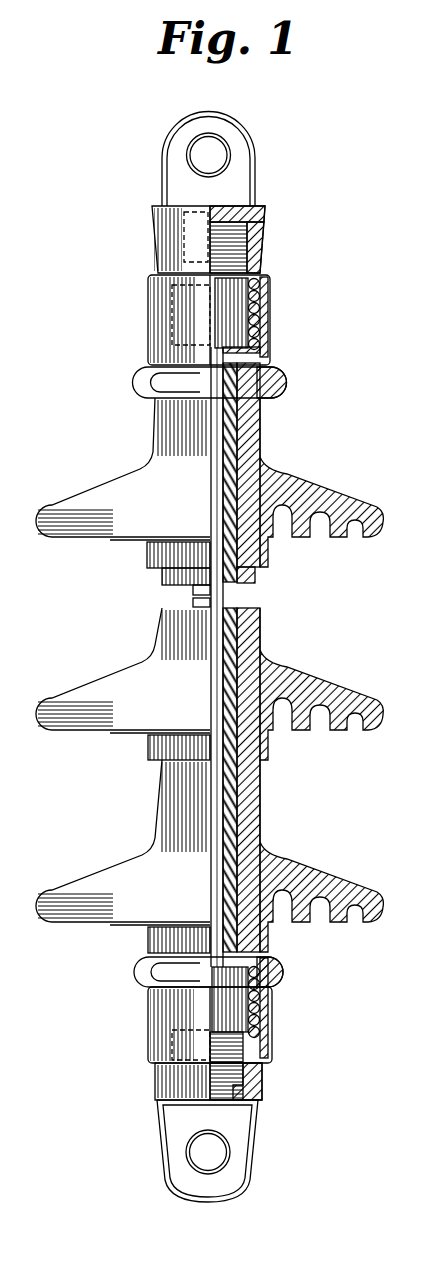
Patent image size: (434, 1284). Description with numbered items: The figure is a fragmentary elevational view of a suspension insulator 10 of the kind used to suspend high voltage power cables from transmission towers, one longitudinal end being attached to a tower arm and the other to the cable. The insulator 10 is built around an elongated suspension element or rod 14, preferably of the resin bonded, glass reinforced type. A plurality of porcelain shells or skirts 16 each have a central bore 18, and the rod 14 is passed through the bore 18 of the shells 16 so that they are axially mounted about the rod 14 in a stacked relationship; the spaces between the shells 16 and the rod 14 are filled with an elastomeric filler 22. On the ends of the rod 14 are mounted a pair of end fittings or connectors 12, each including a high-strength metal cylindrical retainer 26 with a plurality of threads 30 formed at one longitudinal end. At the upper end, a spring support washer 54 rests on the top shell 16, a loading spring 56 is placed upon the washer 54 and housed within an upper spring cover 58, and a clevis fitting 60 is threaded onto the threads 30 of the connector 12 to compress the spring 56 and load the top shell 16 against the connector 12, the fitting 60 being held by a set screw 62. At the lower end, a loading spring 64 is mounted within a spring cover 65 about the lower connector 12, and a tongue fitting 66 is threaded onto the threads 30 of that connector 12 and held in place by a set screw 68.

The suspension insulator 10 is at (321, 132).
The end fitting or connector 12 is at (236, 222).
The rod 14 is at (226, 593).
The porcelain shells or skirts 16 is at (330, 494).
The central bore 18 is at (193, 591).
The elastomeric filler 22 is at (234, 478).
The cylindrical retainer 26 is at (238, 328).
The threads 30 is at (262, 254).
The spring support washer 54 is at (268, 368).
The loading spring 56 is at (259, 306).
The upper spring cover 58 is at (153, 316).
The clevis fitting 60 is at (149, 212).
The set screw 62 is at (262, 221).
The loading spring 64 is at (268, 994).
The spring cover 65 is at (153, 1018).
The tongue fitting 66 is at (155, 1094).
The set screw 68 is at (264, 1093).